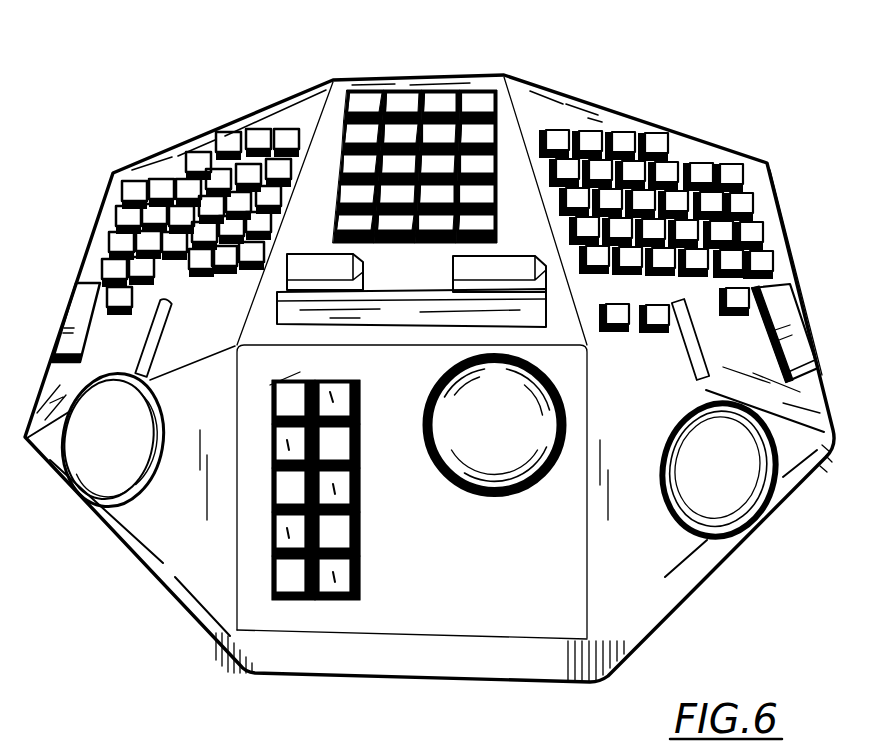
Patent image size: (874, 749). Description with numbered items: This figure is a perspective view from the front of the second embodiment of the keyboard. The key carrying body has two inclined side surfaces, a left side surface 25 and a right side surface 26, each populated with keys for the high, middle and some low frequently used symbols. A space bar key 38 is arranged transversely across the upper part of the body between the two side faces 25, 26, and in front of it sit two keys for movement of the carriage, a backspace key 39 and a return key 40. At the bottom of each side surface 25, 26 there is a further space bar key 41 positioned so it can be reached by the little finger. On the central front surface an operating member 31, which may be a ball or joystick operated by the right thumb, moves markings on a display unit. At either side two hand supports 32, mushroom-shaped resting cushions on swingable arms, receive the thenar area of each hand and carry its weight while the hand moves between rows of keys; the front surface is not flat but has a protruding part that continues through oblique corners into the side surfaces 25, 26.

The left key carrying side surface 25 is at (227, 330).
The right key carrying side surface 26 is at (713, 388).
The operating member 31 is at (489, 500).
The hand support 32 is at (93, 470).
The space bar key 38 is at (413, 307).
The backspace key 39 is at (317, 258).
The return key 40 is at (524, 263).
The space bar key 41 is at (812, 370).